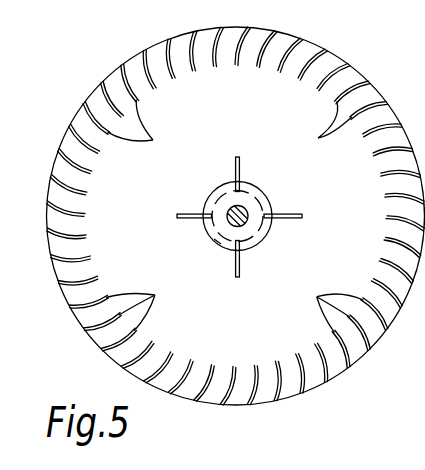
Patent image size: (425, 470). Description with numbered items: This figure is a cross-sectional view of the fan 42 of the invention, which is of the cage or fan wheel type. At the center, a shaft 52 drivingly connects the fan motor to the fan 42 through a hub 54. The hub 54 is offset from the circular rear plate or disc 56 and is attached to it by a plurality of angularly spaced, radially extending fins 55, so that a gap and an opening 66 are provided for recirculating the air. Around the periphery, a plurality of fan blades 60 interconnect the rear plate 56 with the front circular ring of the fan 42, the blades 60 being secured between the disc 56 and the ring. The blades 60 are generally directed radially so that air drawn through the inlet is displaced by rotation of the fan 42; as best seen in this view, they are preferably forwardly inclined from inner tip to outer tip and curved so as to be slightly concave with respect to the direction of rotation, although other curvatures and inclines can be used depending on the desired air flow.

The fan 42 is at (96, 63).
The shaft 52 is at (247, 208).
The hub 54 is at (211, 196).
The fins 55 is at (240, 157).
The rear plate 56 is at (248, 338).
The fan blades 60 is at (174, 77).
The opening 66 is at (217, 242).